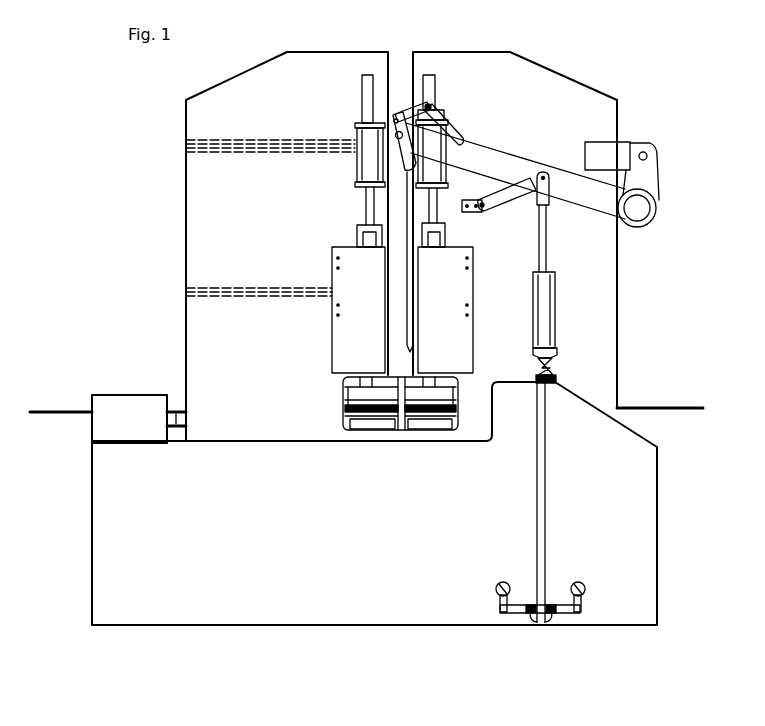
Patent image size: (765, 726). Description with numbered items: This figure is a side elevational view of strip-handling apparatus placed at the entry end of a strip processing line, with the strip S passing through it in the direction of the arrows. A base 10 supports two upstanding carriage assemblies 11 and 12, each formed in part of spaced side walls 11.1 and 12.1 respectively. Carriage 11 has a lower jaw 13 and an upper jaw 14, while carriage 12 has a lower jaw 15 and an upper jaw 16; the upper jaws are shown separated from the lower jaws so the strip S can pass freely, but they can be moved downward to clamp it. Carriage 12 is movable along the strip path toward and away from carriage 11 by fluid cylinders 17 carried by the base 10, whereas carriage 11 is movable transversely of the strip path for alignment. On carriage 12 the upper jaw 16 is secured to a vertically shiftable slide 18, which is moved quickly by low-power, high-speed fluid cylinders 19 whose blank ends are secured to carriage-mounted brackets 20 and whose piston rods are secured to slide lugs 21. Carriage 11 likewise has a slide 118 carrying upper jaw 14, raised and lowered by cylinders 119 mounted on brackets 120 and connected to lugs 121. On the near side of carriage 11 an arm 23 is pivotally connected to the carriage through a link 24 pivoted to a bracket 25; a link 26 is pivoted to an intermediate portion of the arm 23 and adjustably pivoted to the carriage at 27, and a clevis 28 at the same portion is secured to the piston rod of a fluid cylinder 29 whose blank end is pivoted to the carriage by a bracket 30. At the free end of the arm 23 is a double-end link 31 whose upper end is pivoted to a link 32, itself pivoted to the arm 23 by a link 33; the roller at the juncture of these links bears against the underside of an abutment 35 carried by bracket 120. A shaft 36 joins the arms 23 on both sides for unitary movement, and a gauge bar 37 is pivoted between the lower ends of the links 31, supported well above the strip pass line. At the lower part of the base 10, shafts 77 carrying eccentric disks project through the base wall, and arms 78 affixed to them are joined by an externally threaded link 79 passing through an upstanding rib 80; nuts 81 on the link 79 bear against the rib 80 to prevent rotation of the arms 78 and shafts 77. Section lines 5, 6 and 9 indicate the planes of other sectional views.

The section line 5- 5 is at (336, 25).
The section line 6- 6 is at (555, 517).
The section line 9- 9 is at (318, 468).
The base 10 is at (378, 549).
The carriage assembly 11 is at (560, 66).
The side wall 11.1 is at (593, 100).
The carriage assembly 12 is at (243, 76).
The side wall 12.1 is at (205, 160).
The lower jaw 13 is at (430, 432).
The upper jaw 14 is at (440, 396).
The lower jaw 15 is at (363, 432).
The upper jaw 16 is at (352, 395).
The fluid cylinders 17 is at (112, 410).
The slide 18 is at (372, 372).
The fluid cylinders 19 is at (358, 166).
The brackets 20 is at (362, 96).
The slide lugs 21 is at (363, 238).
The arm 23 is at (520, 168).
The link 24 is at (648, 174).
The bracket 25 is at (616, 146).
The link 26 is at (508, 205).
The adjustable pivot 27 is at (480, 214).
The clevis 28 is at (548, 202).
The fluid cylinder 29 is at (550, 300).
The bracket 30 is at (552, 370).
The double-end link 31 is at (408, 152).
The link 32 is at (408, 113).
The link 33 is at (450, 132).
The abutment 35 is at (432, 106).
The shaft 36 is at (643, 212).
The gauge bar 37 is at (414, 297).
The shaft 77 is at (510, 584).
The arm 78 is at (500, 604).
The externally threaded link 79 is at (516, 612).
The upstanding rib 80 is at (546, 473).
The nuts 81 is at (553, 630).
The slide 118 is at (420, 374).
The low-power, high-speed cylinders 119 is at (442, 176).
The brackets 120 is at (432, 90).
The lugs 121 is at (440, 238).
The strip S is at (70, 410).